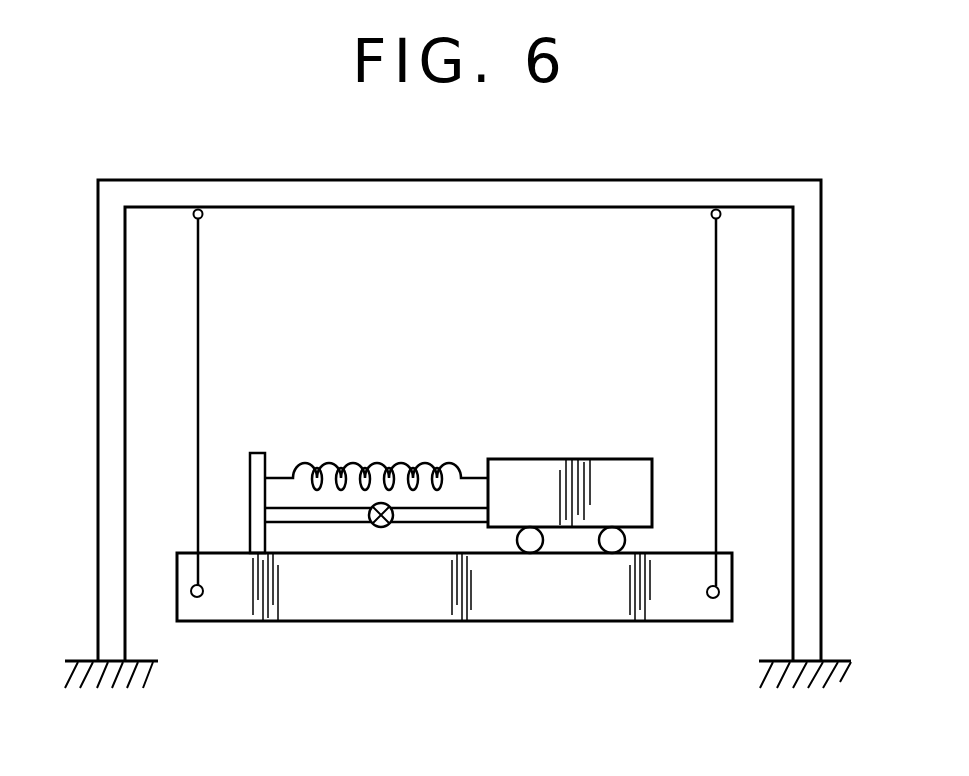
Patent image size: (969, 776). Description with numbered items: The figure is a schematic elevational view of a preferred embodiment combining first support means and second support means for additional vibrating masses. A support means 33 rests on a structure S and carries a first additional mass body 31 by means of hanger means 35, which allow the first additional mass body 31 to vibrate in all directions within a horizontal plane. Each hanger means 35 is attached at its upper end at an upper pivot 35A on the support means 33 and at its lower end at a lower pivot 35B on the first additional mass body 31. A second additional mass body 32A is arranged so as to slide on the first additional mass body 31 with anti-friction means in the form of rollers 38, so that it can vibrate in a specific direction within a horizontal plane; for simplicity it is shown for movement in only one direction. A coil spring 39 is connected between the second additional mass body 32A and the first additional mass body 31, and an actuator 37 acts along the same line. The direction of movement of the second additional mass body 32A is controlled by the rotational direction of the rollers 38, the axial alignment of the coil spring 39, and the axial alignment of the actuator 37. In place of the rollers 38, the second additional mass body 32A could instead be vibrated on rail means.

The first additional mass body 31 is at (548, 623).
The second additional mass body 32A is at (535, 472).
The support means 33 is at (487, 192).
The hanger means 35 is at (199, 340).
The upper pivot of hanger means 35A is at (202, 218).
The lower pivot of hanger means 35B is at (203, 590).
The actuator 37 is at (377, 527).
The rollers 38 is at (517, 538).
The coil spring 39 is at (404, 462).
The structure S is at (86, 661).